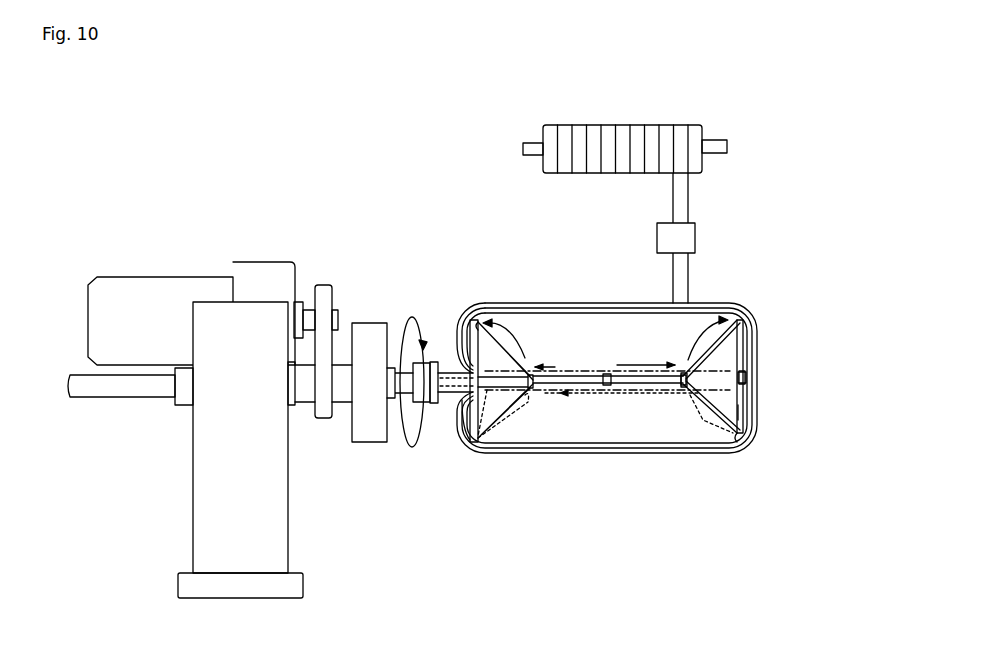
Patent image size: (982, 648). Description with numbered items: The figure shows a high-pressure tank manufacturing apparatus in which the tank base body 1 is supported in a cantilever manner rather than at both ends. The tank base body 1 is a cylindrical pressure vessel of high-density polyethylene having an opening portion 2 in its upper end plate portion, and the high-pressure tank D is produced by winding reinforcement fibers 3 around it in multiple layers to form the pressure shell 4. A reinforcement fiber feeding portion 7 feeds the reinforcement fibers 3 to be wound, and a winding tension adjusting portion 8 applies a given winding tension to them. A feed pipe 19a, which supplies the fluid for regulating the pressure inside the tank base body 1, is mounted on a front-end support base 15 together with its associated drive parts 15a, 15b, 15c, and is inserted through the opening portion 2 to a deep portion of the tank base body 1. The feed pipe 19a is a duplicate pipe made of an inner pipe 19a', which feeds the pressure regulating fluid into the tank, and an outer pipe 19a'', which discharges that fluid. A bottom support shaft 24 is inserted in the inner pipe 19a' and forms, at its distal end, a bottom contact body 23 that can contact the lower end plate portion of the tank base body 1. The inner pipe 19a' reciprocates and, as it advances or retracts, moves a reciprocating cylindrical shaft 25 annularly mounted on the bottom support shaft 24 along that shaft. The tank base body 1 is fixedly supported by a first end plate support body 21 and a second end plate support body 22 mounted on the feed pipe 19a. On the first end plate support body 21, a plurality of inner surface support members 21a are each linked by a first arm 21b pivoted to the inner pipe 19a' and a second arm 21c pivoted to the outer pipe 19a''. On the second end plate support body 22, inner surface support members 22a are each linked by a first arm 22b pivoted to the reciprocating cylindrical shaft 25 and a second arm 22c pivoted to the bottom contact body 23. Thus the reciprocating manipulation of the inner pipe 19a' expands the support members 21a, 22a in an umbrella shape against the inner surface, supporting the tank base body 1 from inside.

The tank base body 1 is at (460, 356).
The opening portion 2 is at (442, 397).
The reinforcement fibers 3 is at (677, 270).
The pressure shell 4 is at (594, 302).
The reinforcement fiber feeding portion 7 is at (702, 100).
The winding tension adjusting portion 8 is at (692, 237).
The front-end support base 15 is at (267, 447).
The bearing bracket 15a is at (373, 428).
The motor 15b is at (157, 287).
The pulley 15c is at (322, 292).
The feed pipe 19a is at (607, 484).
The inner pipe 19a' is at (596, 293).
The outer pipe 19a'' is at (475, 503).
The first end plate support body 21 is at (537, 392).
The inner surface support member 21a is at (493, 453).
The first arm 21b is at (530, 403).
The second arm 21c is at (487, 408).
The second end plate support body 22 is at (705, 413).
The inner surface support member 22a is at (722, 443).
The first arm 22b is at (700, 397).
The second arm 22c is at (742, 413).
The bottom contact body 23 is at (743, 376).
The bottom support shaft 24 is at (686, 378).
The reciprocating cylindrical shaft 25 is at (608, 381).
The high-pressure tank D is at (482, 300).